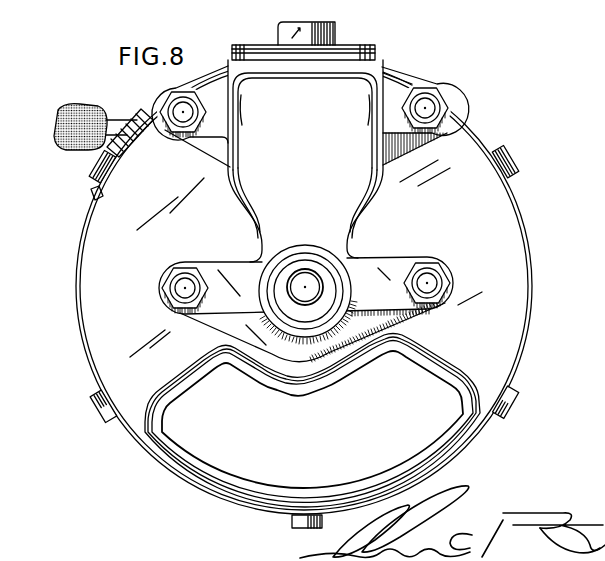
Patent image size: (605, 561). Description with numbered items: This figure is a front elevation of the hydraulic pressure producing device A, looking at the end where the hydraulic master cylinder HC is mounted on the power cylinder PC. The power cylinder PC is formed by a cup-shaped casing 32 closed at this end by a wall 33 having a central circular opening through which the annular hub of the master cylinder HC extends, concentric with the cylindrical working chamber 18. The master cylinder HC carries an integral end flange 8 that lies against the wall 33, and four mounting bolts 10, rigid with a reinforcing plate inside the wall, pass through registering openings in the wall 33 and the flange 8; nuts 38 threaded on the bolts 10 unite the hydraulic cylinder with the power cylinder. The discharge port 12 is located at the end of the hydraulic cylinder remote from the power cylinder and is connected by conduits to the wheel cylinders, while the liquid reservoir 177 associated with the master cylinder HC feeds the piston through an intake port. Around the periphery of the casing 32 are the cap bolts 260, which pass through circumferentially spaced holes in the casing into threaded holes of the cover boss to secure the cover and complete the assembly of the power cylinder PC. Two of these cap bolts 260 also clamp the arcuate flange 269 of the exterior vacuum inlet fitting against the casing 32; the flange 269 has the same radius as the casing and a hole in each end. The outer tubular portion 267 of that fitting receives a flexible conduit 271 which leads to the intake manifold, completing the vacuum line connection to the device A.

The end flange 8 is at (397, 168).
The mounting bolts 10 is at (183, 112).
The discharge port 12 is at (320, 238).
The cylindrical working chamber 18 is at (353, 284).
The cup-shaped casing 32 is at (521, 208).
The end wall 33 is at (508, 258).
The nuts 38 is at (190, 134).
The liquid reservoir 177 is at (236, 184).
The cap bolts 260 is at (90, 166).
The outer tubular portion 267 is at (128, 101).
The arcuate flange 269 is at (92, 192).
The flexible conduit 271 is at (62, 107).
The hydraulic master cylinder HC is at (318, 153).
The power cylinder PC is at (76, 277).
The hydraulic pressure producing device A is at (144, 471).